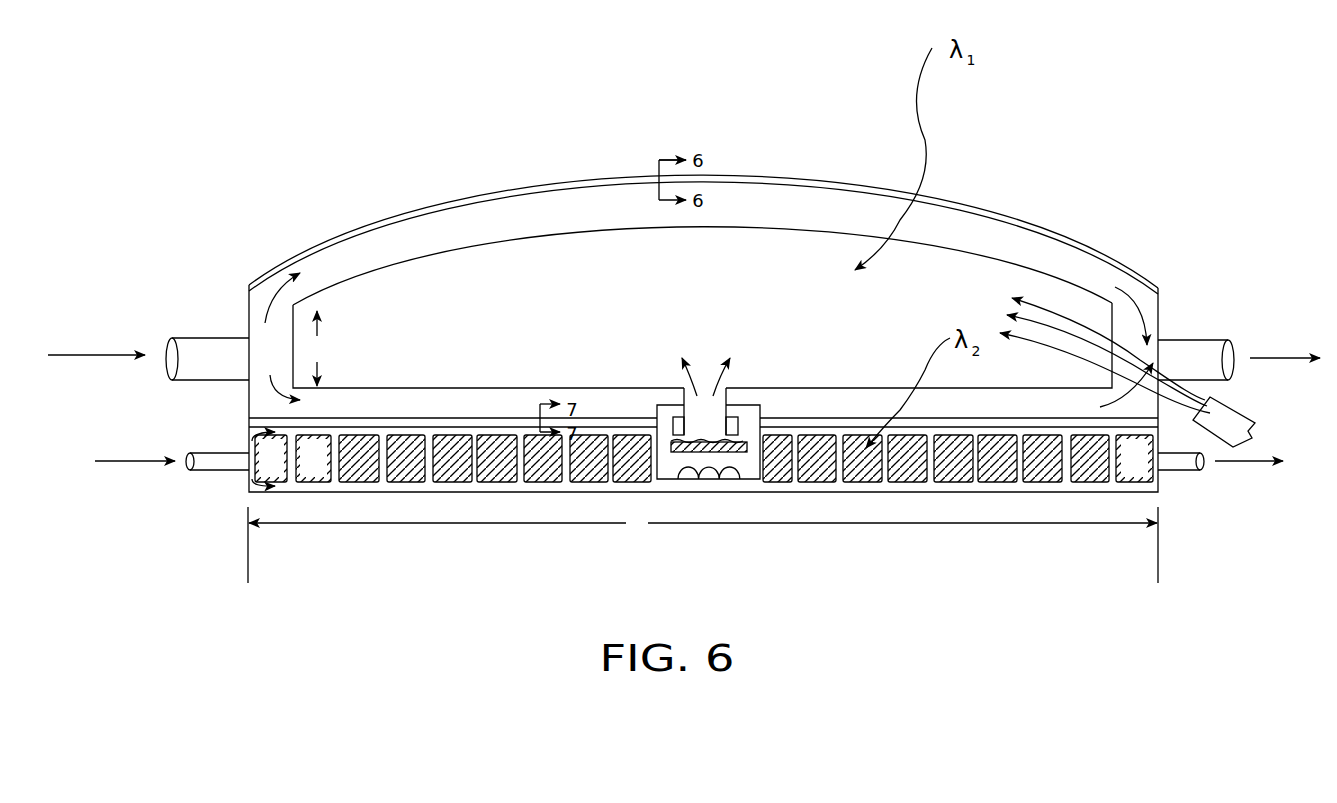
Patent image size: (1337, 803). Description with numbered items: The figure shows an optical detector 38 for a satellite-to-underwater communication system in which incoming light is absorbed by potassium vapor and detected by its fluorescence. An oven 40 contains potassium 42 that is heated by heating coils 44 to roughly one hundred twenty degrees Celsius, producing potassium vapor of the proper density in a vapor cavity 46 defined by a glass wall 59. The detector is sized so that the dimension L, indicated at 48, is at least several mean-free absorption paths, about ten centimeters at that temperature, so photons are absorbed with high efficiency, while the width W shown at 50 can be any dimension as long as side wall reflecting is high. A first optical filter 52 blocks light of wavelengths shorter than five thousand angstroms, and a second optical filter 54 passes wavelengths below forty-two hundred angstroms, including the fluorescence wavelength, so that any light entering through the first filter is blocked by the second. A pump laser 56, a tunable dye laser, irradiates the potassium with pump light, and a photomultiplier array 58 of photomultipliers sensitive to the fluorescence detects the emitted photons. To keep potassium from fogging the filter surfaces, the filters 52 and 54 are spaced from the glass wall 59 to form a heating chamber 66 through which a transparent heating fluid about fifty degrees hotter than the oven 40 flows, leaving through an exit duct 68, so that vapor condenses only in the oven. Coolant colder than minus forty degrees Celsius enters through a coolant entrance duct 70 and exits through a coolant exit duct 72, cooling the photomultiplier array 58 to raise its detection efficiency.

The detector 38 is at (797, 128).
The oven 40 is at (752, 470).
The potassium 42 is at (716, 455).
The heating coils 44 is at (693, 476).
The vapor cavity 46 is at (925, 272).
The inner chamber wall 48 is at (323, 318).
The width W 50 is at (912, 524).
The first optical filter 52 is at (1058, 233).
The second optical filter 54 is at (1068, 428).
The pump laser 56 is at (1247, 404).
The photomultiplier array 58 is at (289, 486).
The glass wall 59 is at (397, 268).
The heating chamber 66 is at (210, 338).
The exit duct 68 is at (1218, 340).
The coolant entrance duct 70 is at (203, 473).
The coolant exit duct 72 is at (1193, 472).